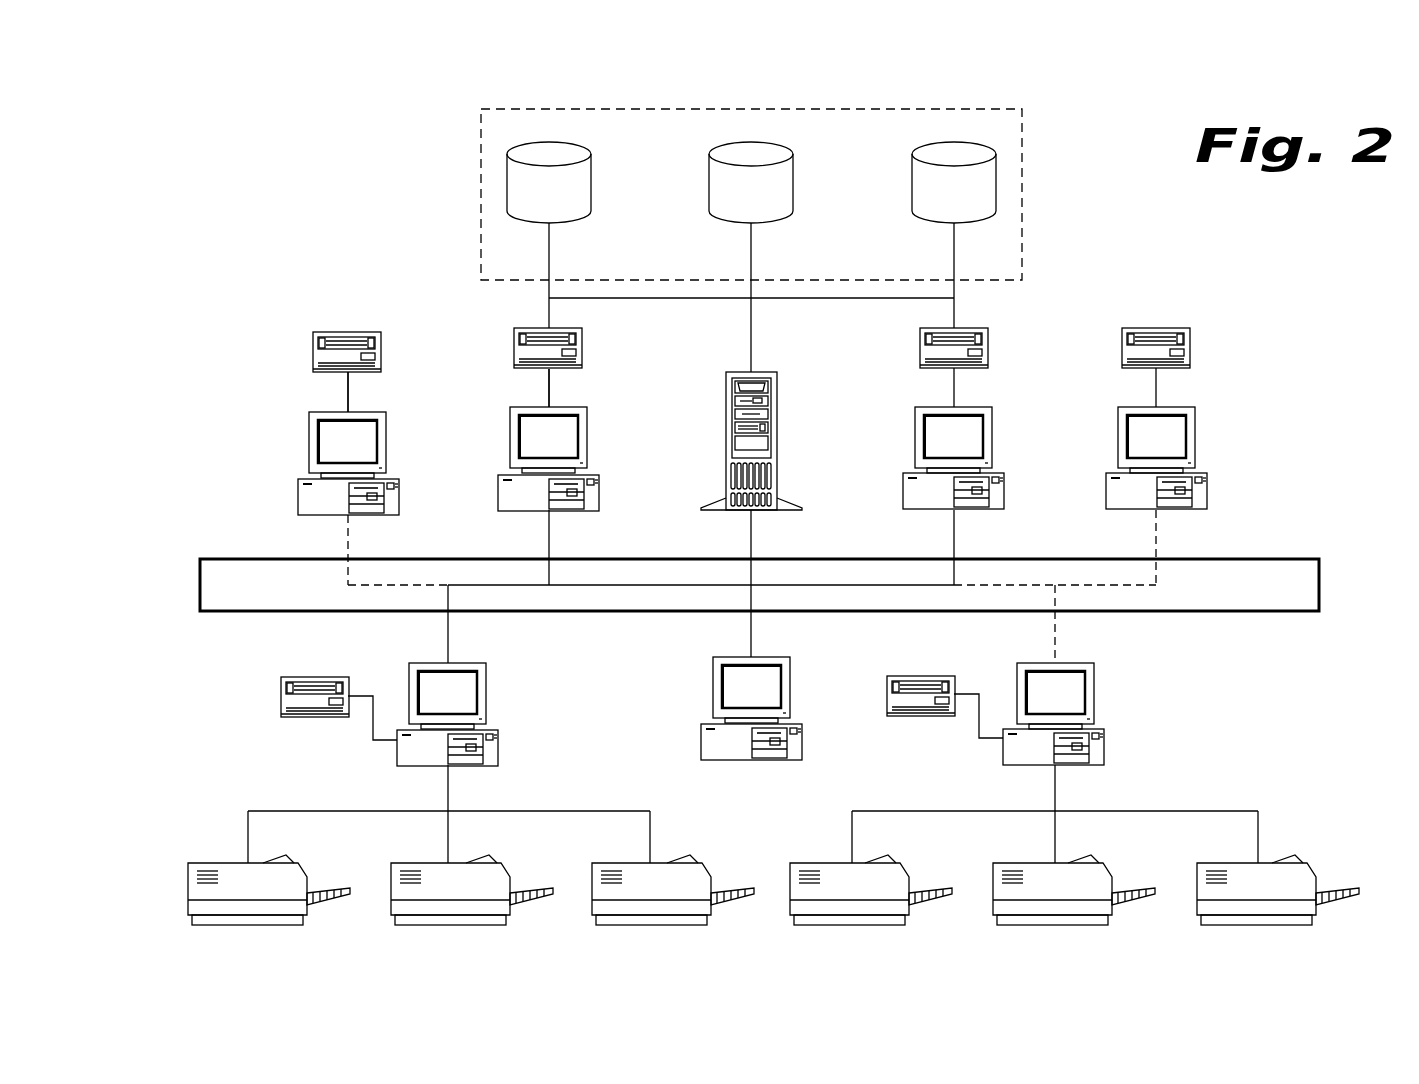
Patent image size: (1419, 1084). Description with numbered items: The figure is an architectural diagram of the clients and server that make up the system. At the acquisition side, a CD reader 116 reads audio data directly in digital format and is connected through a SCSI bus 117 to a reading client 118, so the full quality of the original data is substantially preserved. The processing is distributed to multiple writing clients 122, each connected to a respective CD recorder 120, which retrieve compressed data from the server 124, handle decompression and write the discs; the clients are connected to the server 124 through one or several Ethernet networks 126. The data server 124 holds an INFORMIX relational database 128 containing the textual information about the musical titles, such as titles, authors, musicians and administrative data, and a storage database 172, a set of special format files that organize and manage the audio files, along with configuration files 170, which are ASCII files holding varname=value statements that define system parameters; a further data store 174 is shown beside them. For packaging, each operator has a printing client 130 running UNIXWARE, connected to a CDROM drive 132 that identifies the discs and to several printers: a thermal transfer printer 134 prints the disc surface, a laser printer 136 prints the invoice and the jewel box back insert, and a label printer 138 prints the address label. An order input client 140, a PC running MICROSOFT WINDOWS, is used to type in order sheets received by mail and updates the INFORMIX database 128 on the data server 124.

The CD reader 116 is at (381, 351).
The SCSI bus 117 is at (343, 393).
The reading client 118 is at (384, 437).
The CD recorder 120 is at (990, 350).
The writing client 122 is at (992, 436).
The server 124 is at (777, 402).
The Ethernet network 126 is at (200, 586).
The INFORMIX relational database 128 is at (748, 100).
The printing client 130 is at (487, 695).
The CDROM drive 132 is at (281, 692).
The thermal transfer printer 134 is at (197, 900).
The laser printer 136 is at (398, 900).
The label printer 138 is at (599, 900).
The order input client 140 is at (790, 690).
The configuration file 170 is at (592, 178).
The storage database 172 is at (717, 178).
The database 174 is at (921, 178).